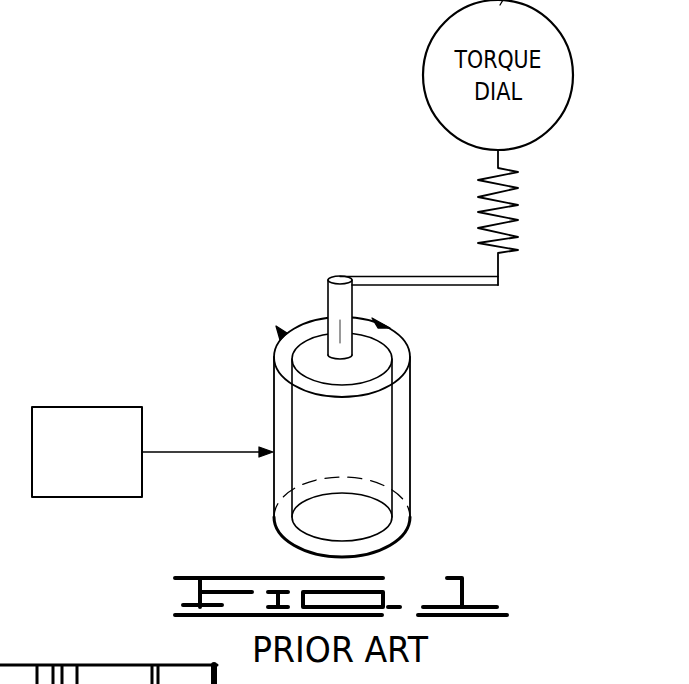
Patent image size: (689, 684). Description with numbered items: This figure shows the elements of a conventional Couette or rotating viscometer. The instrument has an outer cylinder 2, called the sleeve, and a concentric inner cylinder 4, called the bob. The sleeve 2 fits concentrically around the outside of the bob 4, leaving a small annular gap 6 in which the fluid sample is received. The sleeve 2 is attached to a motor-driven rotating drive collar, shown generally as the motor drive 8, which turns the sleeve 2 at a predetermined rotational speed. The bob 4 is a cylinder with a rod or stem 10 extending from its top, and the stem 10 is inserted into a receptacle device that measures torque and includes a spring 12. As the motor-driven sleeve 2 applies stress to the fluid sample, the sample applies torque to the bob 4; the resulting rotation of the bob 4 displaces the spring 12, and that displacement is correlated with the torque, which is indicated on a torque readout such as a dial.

The outer cylinder 2 is at (410, 455).
The inner cylinder 4 is at (368, 360).
The annular gap 6 is at (280, 338).
The motor drive 8 is at (80, 407).
The stem 10 is at (333, 278).
The spring 12 is at (513, 205).